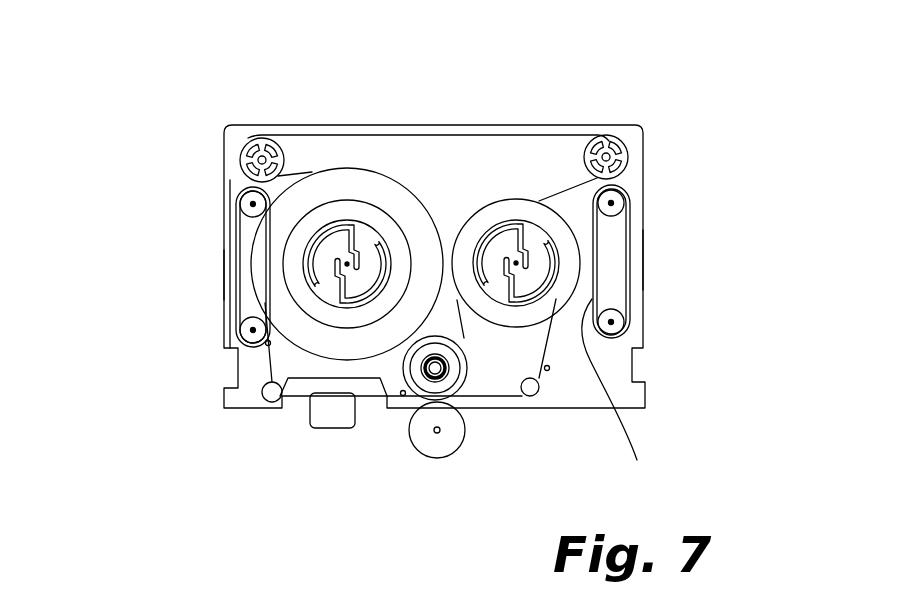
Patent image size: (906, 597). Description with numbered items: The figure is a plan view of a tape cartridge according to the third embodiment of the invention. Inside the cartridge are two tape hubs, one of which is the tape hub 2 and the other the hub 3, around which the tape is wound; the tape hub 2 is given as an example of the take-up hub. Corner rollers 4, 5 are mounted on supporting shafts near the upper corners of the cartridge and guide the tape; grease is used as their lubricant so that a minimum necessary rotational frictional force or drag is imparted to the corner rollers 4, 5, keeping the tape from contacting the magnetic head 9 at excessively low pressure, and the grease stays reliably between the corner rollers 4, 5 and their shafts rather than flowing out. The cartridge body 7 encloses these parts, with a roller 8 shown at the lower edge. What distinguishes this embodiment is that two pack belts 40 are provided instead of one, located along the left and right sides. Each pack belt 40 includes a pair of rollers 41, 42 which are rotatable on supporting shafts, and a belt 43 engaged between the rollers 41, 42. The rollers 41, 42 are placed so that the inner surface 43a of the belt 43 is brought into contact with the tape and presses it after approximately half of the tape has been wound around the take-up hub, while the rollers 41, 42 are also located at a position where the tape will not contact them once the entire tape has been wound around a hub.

The tape hub 2 is at (346, 207).
The take-up reel 3 is at (500, 212).
The corner roller 4 is at (249, 143).
The corner roller 5 is at (627, 155).
The cassette housing 7 is at (401, 137).
The roller 8 is at (437, 448).
The magnetic head 9 is at (345, 417).
The pack belt 40 is at (222, 282).
The roller 41 is at (250, 205).
The roller 42 is at (247, 335).
The belt 43 is at (235, 243).
The inner surface of the belt 43a is at (636, 394).